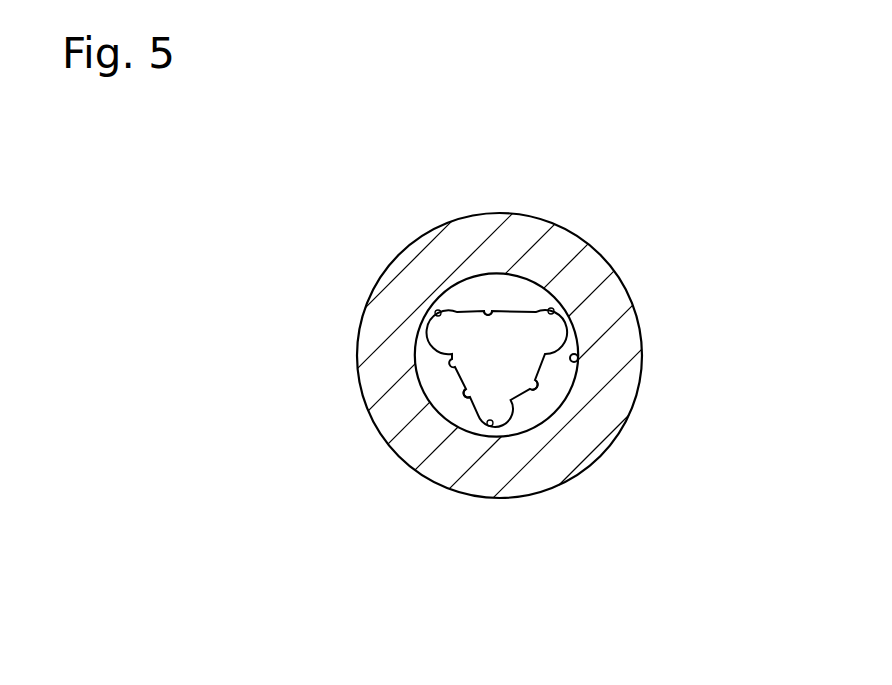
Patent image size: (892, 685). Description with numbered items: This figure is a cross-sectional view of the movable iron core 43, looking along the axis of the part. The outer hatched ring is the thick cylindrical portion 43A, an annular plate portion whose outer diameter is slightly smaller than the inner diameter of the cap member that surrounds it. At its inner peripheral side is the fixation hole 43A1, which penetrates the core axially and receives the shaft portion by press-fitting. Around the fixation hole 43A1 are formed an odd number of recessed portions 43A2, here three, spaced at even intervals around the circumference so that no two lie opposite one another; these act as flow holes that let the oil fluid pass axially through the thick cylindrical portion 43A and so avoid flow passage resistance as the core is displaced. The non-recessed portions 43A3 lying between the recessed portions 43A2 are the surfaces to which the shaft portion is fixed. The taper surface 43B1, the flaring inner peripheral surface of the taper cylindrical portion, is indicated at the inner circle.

The movable iron core 43 is at (531, 253).
The thick cylindrical portion 43A is at (412, 278).
The fixation hole 43A1 is at (452, 361).
The recessed portion 43A2 is at (550, 303).
The non-recessed portion 43A3 is at (485, 308).
The taper surface 43B1 is at (576, 357).